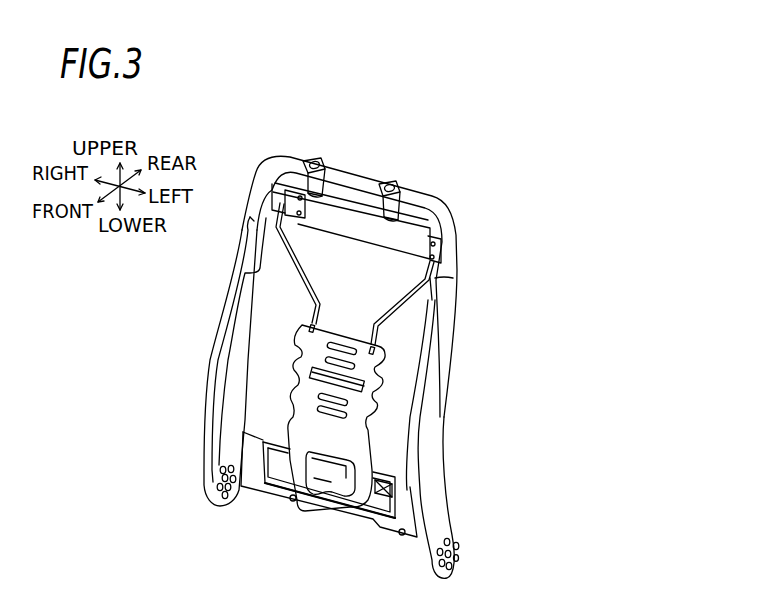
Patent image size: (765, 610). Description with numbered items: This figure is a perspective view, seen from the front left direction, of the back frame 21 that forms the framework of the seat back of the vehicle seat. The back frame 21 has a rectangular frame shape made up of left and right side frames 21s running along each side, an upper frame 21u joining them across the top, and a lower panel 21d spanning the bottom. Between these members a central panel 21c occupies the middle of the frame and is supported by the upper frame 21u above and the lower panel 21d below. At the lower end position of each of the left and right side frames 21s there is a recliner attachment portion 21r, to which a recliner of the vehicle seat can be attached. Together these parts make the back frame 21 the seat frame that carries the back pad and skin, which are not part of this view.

The back frame 21 is at (481, 308).
The upper frame 21u is at (350, 183).
The side frames 21s is at (203, 407).
The recliner attachment portions 21r is at (214, 470).
The central panel 21c is at (305, 435).
The lower panel 21d is at (373, 503).